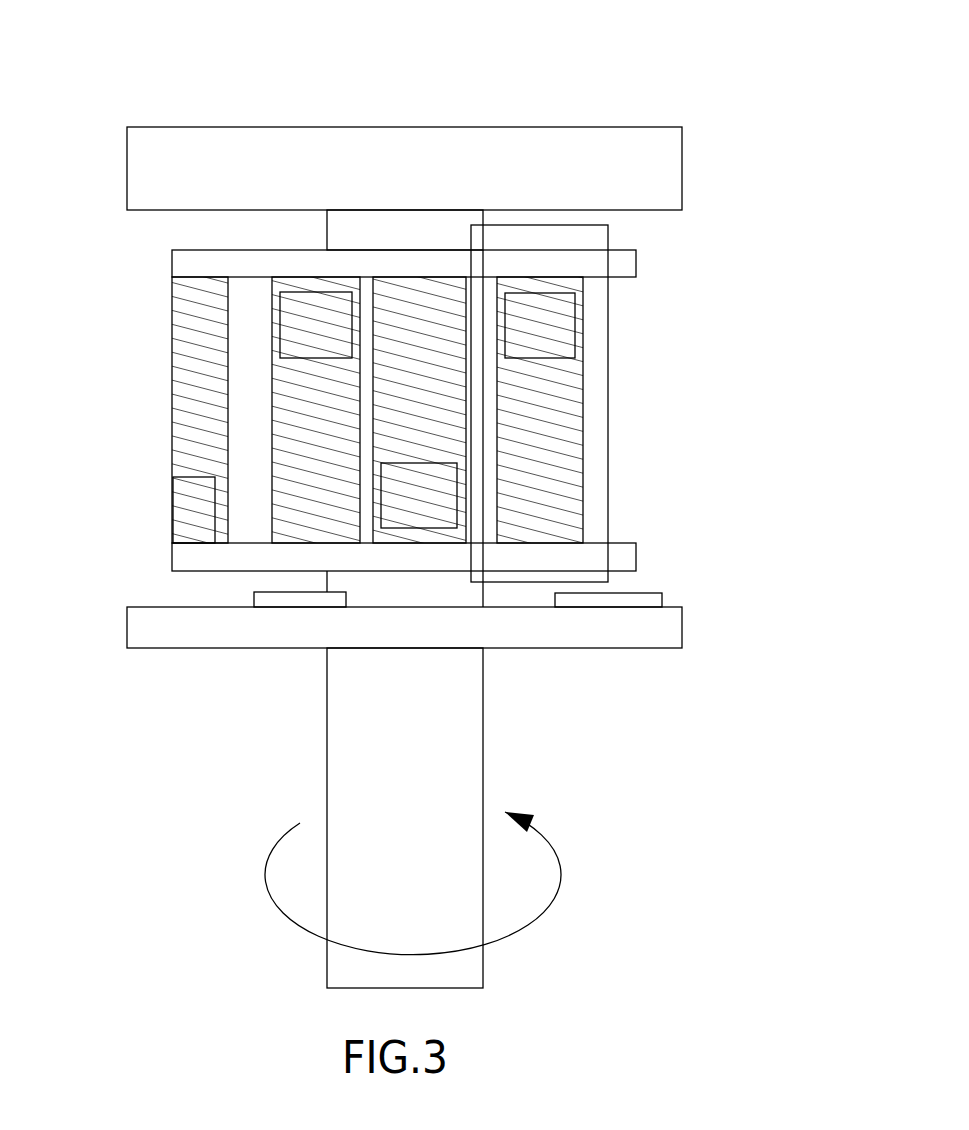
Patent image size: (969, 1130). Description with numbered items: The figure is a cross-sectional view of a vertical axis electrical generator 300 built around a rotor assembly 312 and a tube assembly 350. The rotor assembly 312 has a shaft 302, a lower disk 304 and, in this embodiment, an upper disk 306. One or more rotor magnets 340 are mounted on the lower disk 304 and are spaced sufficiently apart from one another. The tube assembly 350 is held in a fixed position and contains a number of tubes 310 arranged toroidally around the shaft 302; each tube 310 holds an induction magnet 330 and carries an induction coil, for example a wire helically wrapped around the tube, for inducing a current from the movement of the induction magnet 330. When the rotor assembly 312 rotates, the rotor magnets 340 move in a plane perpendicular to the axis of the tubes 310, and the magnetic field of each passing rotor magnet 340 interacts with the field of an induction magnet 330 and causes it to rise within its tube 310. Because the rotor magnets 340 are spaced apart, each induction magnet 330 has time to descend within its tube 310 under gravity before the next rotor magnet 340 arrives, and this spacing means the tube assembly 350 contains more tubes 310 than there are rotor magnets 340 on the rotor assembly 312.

The vertical axis electrical generator 300 is at (225, 95).
The shaft 302 is at (483, 753).
The lower disk 304 is at (670, 622).
The upper disk 306 is at (682, 177).
The tube 310 is at (608, 302).
The rotor assembly 312 is at (694, 633).
The induction magnet 330 is at (307, 310).
The rotor magnet 340 is at (255, 598).
The tube assembly 350 is at (594, 436).